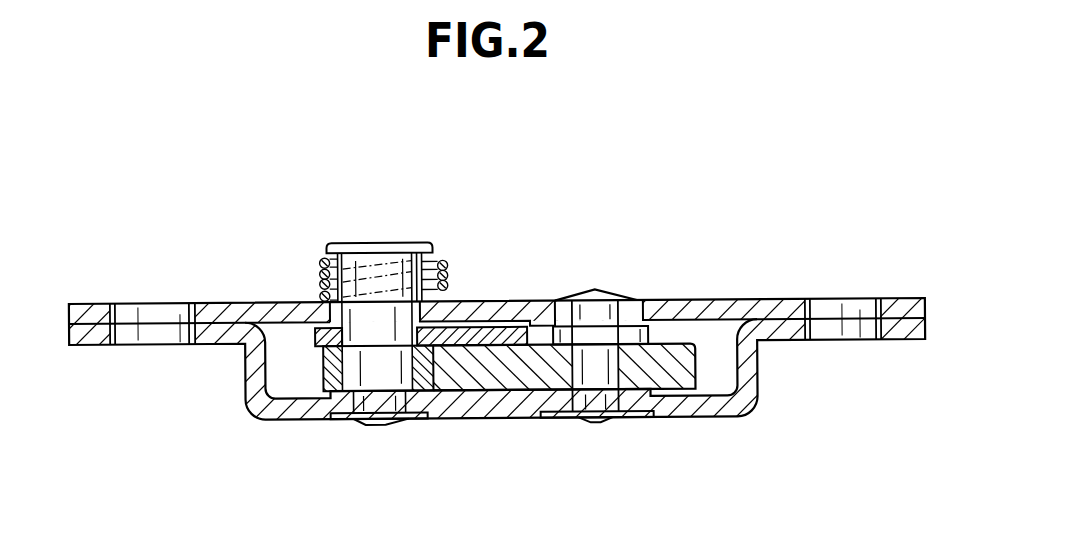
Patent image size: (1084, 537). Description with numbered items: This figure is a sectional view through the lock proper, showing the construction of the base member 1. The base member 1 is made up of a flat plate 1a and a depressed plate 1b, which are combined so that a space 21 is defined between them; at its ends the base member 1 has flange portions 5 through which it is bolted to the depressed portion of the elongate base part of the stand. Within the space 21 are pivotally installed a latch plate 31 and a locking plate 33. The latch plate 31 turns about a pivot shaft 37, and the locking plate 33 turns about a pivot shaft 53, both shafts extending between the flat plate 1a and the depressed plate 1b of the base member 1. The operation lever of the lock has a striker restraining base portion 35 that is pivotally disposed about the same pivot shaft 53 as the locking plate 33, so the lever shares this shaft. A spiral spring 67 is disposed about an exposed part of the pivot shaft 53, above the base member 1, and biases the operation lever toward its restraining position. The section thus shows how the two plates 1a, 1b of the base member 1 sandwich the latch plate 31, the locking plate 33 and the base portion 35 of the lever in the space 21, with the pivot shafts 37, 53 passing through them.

The base member 1 is at (866, 294).
The flat plate 1a is at (737, 311).
The depressed plate 1b is at (791, 333).
The flange portion 5 is at (89, 328).
The space 21 is at (718, 368).
The latch plate 31 is at (672, 346).
The locking plate 33 is at (322, 372).
The striker restraining base portion 35 is at (500, 330).
The pivot shaft 37 is at (604, 374).
The pivot shaft 53 is at (386, 398).
The spiral spring 67 is at (320, 262).